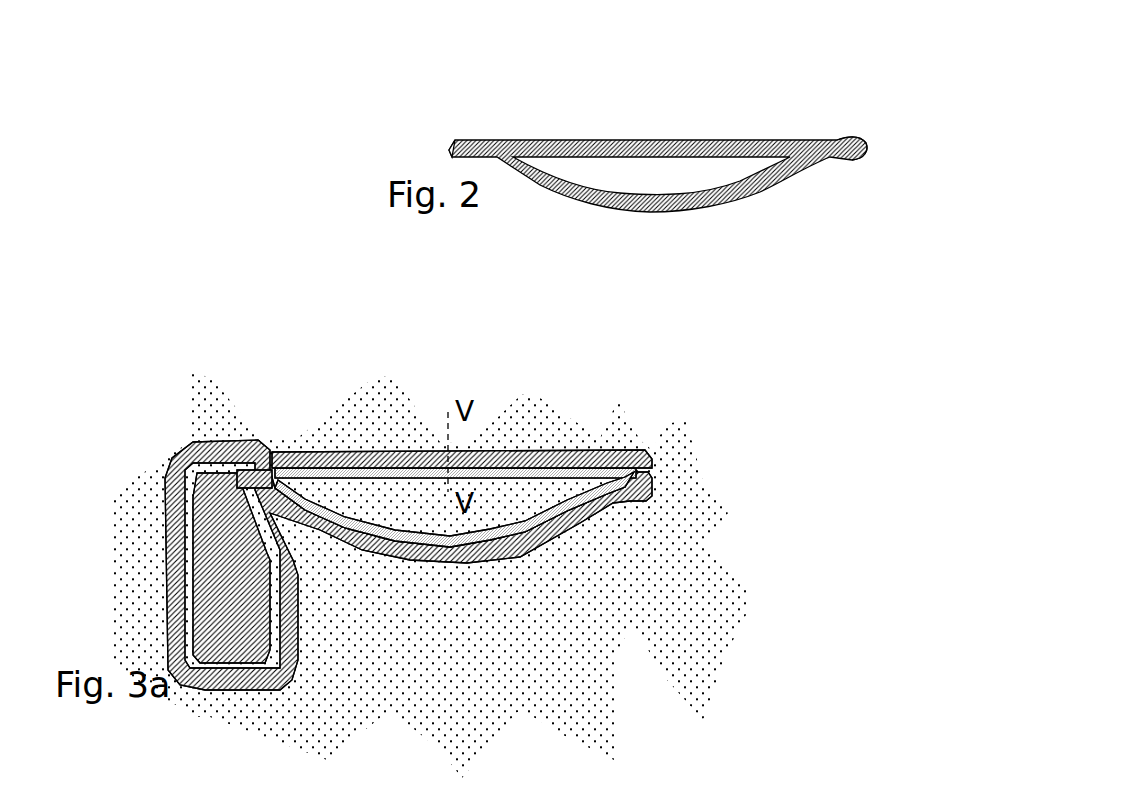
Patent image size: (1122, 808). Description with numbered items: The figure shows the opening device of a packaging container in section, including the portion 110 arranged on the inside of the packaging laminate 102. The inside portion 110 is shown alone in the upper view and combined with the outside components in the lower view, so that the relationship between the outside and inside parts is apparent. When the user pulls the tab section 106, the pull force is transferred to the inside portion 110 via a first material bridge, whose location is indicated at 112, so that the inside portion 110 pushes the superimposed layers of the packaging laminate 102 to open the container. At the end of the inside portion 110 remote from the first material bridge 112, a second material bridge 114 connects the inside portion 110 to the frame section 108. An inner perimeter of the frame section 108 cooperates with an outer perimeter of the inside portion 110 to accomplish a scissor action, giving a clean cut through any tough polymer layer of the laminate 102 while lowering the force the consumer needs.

In FIG. 3A, the packaging laminate 102 is at (686, 608).
In FIG. 3A, the tab section 106 is at (240, 593).
In FIG. 3A, the frame section 108 is at (442, 560).
In FIG. 2, the inside portion 110 is at (737, 197).
In FIG. 3A, the inside portion 110 is at (525, 521).
In FIG. 2, the first material bridge 112 is at (450, 150).
In FIG. 3A, the first material bridge 112 is at (255, 483).
In FIG. 2, the second material bridge 114 is at (852, 137).
In FIG. 3A, the second material bridge 114 is at (640, 476).